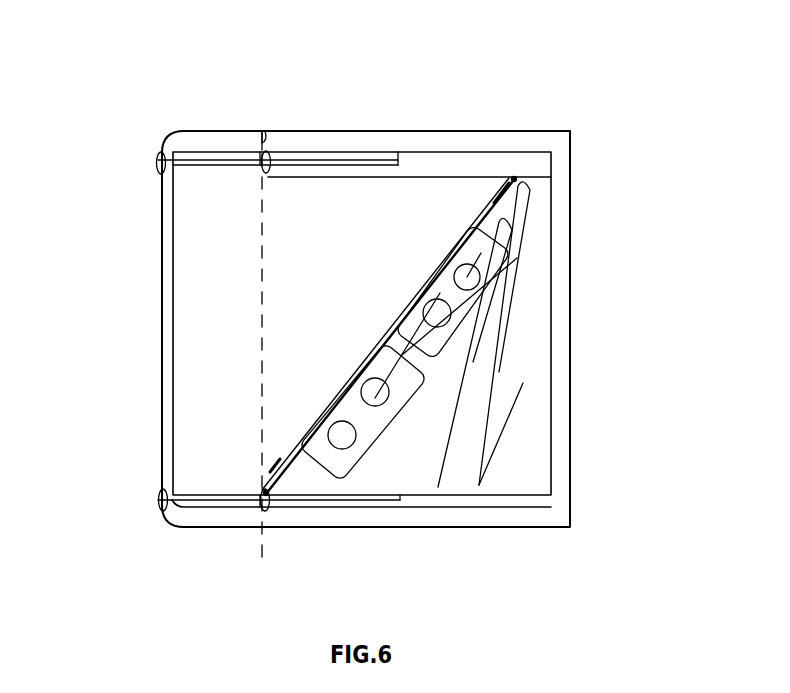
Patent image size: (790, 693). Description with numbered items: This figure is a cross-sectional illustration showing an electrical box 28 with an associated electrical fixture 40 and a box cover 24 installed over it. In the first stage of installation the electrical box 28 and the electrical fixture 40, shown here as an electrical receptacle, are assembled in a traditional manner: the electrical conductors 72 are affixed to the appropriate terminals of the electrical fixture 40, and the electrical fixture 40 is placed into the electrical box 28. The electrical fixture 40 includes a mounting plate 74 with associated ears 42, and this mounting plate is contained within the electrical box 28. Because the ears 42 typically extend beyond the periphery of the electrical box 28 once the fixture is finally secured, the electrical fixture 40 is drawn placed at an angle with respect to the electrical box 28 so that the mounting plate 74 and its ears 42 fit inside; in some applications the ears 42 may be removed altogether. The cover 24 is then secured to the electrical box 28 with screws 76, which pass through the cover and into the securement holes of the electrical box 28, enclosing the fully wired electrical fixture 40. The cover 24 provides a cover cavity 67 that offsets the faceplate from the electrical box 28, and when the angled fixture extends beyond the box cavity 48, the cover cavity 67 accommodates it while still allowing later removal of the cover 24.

The cover 24 is at (189, 130).
The electrical box 28 is at (570, 427).
The electrical fixture 40 is at (380, 443).
The ears 42 is at (499, 176).
The box cavity 48 is at (330, 242).
The cover cavity 67 is at (212, 223).
The electrical conductors 72 is at (473, 360).
The mounting plate 74 is at (490, 201).
The screws 76 is at (157, 166).